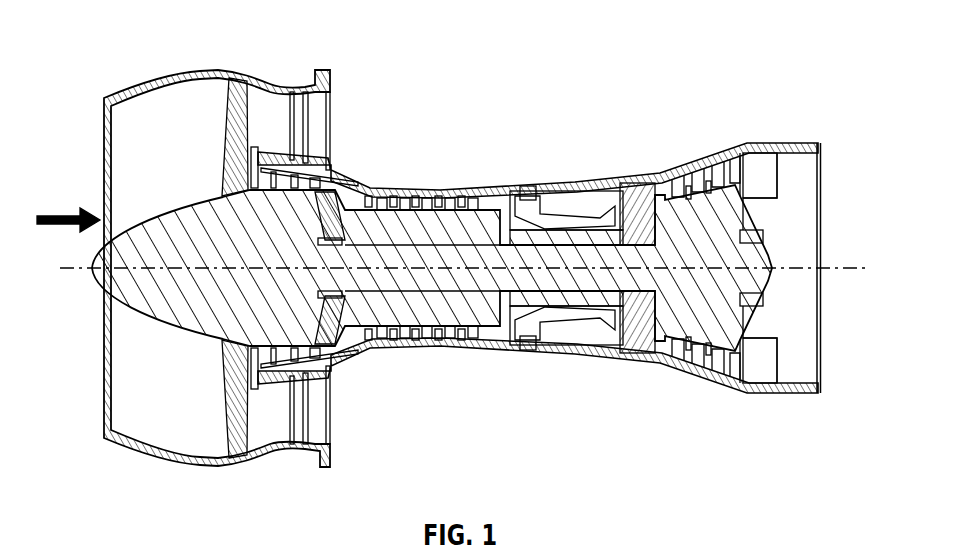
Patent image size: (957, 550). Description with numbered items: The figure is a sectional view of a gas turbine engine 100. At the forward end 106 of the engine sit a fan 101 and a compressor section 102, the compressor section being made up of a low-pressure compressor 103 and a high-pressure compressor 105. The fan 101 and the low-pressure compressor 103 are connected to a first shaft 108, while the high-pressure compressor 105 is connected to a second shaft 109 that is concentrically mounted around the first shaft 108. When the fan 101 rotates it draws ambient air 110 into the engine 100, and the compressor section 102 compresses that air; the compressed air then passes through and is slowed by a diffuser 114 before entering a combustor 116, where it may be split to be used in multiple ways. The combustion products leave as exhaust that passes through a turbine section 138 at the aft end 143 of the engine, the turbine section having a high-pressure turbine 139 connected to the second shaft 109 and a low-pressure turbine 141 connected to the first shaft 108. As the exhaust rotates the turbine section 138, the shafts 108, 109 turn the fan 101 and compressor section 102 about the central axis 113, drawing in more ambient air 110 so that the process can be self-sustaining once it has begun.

The gas turbine engine 100 is at (542, 408).
The fan 101 is at (220, 71).
The compressor section 102 is at (434, 416).
The low-pressure compressor 103 is at (325, 345).
The high-pressure compressor 105 is at (432, 213).
The forward end 106 is at (350, 162).
The first shaft 108 is at (413, 283).
The second shaft 109 is at (512, 352).
The ambient air 110 is at (74, 212).
The central axis 113 is at (835, 260).
The diffuser 114 is at (534, 194).
The combustor 116 is at (578, 200).
The turbine section 138 is at (704, 421).
The high-pressure turbine 139 is at (627, 356).
The low-pressure turbine 141 is at (718, 316).
The aft end 143 is at (678, 388).